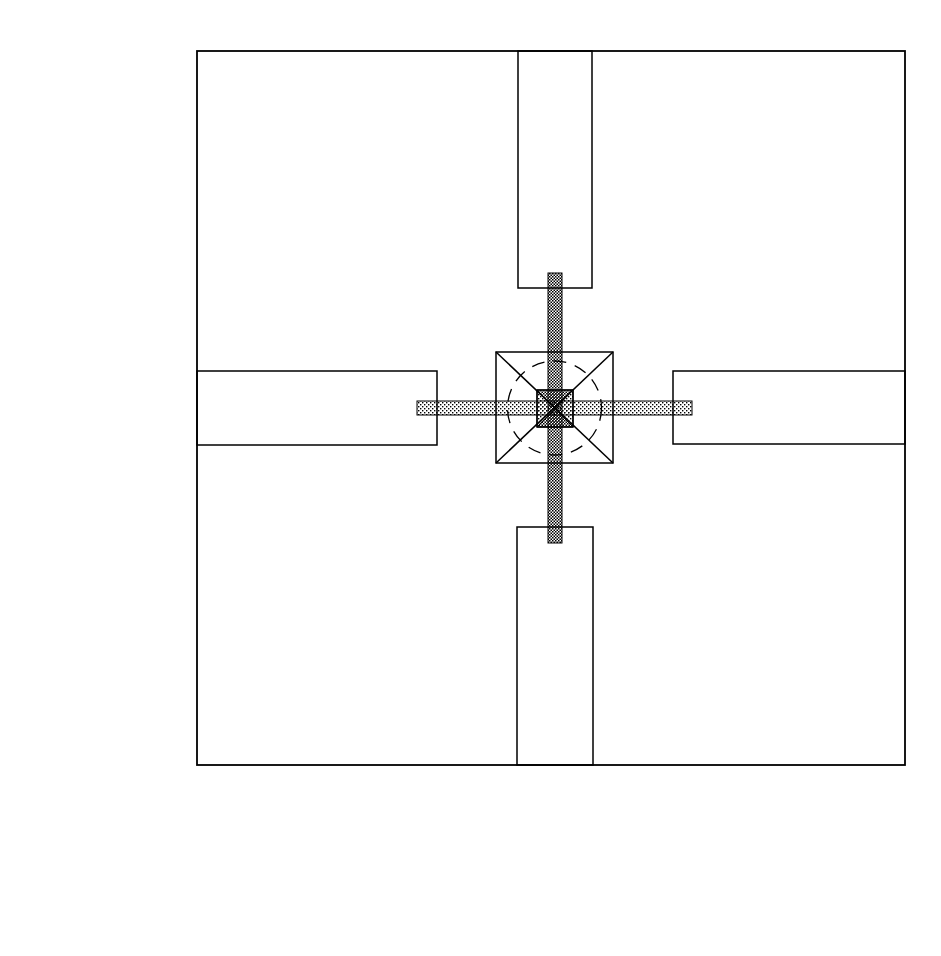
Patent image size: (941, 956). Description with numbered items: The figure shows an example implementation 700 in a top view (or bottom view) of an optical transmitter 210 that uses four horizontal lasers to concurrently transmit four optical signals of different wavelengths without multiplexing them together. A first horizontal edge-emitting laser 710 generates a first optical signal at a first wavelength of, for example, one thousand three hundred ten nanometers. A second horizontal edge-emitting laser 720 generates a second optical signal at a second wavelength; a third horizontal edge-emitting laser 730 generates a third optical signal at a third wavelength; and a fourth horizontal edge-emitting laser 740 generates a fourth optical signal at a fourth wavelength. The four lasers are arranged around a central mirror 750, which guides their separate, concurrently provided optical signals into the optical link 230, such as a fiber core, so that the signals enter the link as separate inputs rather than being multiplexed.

The example implementation 700 is at (118, 76).
The optical transmitter 210 is at (551, 408).
The first horizontal laser (Edge-Emitting Laser 1) 710 is at (463, 398).
The second horizontal laser (Edge-Emitting Laser 2) 720 is at (547, 300).
The third horizontal laser (Edge-Emitting Laser 3) 730 is at (651, 398).
The fourth horizontal laser (Edge-Emitting Laser 4) 740 is at (547, 495).
The mirror 750 is at (601, 354).
The optical link 230 is at (588, 451).